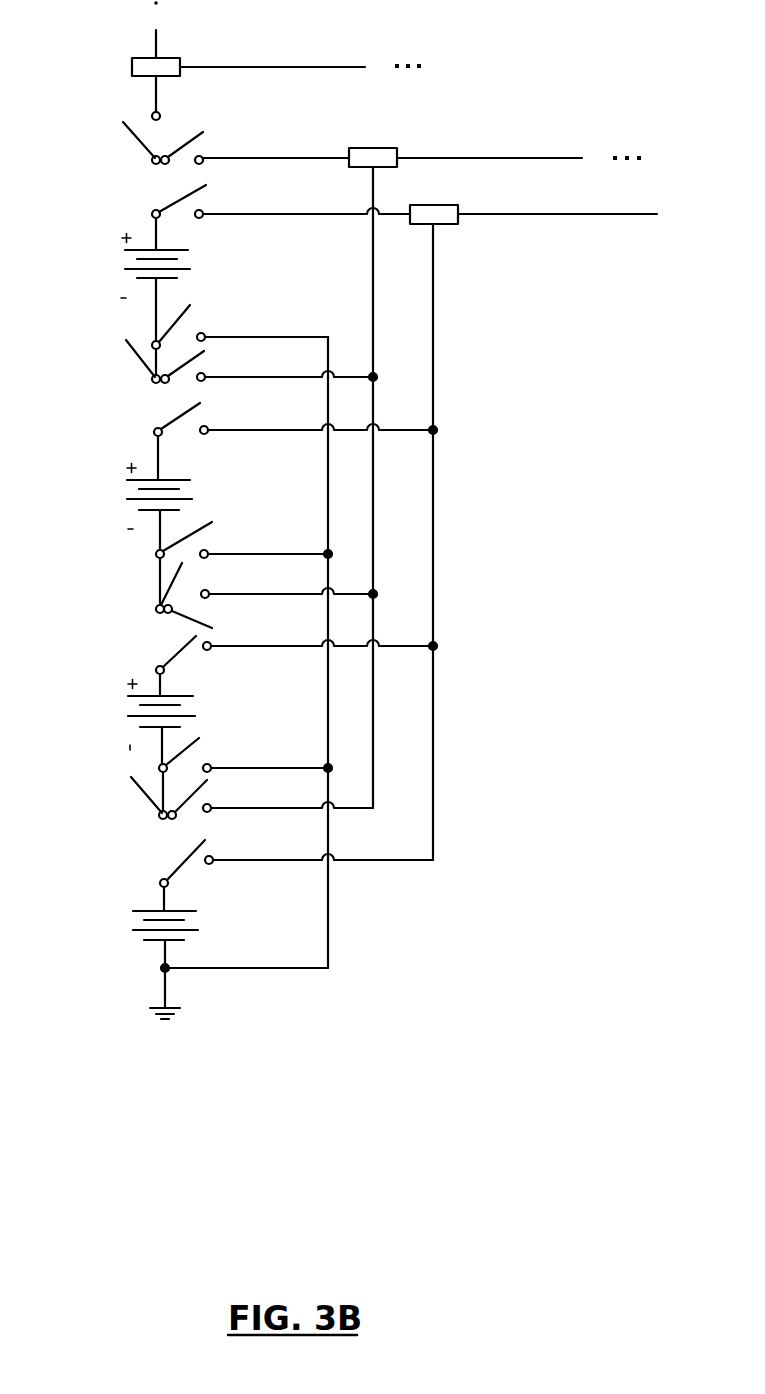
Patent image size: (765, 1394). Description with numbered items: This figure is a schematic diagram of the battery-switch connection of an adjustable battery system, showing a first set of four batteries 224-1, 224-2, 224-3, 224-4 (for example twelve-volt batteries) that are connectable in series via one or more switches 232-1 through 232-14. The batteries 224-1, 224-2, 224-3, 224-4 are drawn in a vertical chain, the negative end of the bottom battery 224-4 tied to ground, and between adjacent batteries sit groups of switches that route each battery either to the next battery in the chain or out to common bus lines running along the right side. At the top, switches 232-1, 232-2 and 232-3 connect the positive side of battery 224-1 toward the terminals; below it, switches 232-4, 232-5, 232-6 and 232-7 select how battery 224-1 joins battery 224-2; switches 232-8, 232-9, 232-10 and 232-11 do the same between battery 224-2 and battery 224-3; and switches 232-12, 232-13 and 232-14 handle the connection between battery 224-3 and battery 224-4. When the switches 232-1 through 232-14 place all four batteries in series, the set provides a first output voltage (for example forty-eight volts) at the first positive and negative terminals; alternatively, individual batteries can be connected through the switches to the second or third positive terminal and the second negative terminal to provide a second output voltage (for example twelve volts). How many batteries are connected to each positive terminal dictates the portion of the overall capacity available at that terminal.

The switch 232-1 is at (121, 119).
The switch 232-2 is at (188, 131).
The switch 232-3 is at (166, 199).
The switch 232-4 is at (114, 339).
The switch 232-5 is at (192, 311).
The switch 232-6 is at (211, 366).
The switch 232-7 is at (210, 413).
The switch 232-8 is at (214, 521).
The switch 232-9 is at (157, 598).
The switch 232-10 is at (218, 630).
The switch 232-11 is at (163, 656).
The switch 232-12 is at (204, 742).
The switch 232-13 is at (210, 782).
The switch 232-14 is at (175, 865).
The battery 224-1 is at (118, 274).
The battery 224-2 is at (114, 510).
The battery 224-3 is at (118, 717).
The battery 224-4 is at (121, 934).